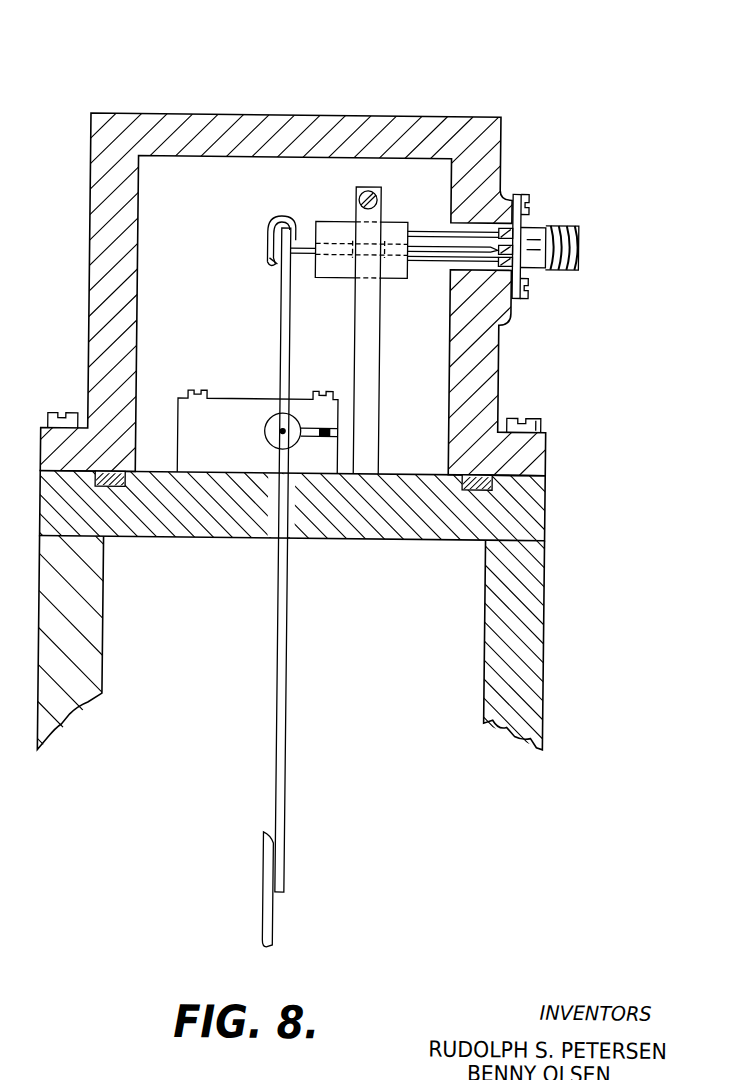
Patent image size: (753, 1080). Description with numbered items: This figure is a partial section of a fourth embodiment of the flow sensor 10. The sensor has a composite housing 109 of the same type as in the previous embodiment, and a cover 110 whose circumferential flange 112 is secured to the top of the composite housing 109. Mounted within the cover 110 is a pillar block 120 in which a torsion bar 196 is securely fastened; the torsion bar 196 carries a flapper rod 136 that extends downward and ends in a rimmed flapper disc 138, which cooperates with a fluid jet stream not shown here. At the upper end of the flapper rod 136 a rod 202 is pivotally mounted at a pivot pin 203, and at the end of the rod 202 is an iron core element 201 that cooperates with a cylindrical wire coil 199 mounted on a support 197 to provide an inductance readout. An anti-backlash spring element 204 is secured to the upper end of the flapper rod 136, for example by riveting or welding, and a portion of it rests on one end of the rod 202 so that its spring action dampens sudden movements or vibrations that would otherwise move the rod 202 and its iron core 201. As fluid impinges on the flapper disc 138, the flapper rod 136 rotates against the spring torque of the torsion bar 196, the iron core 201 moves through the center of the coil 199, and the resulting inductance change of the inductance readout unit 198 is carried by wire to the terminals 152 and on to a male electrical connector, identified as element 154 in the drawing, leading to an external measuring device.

The flow sensor 10 is at (556, 95).
The composite housing 109 is at (563, 544).
The cover 110 is at (501, 388).
The circumferential flange 112 is at (549, 460).
The pillar block 120 is at (343, 445).
The flapper rod 136 is at (288, 764).
The rimmed flapper disc 138 is at (280, 920).
The terminals 152 is at (506, 254).
The threaded connector 154 is at (580, 245).
The torsion bar 196 is at (279, 419).
The support 197 is at (377, 361).
The inductance readout unit 198 is at (325, 203).
The cylindrical wire coil 199 is at (394, 227).
The iron core element 201 is at (376, 253).
The rod 202 is at (304, 254).
The pivot pin 203 is at (280, 262).
The anti-backlash spring element 204 is at (269, 234).